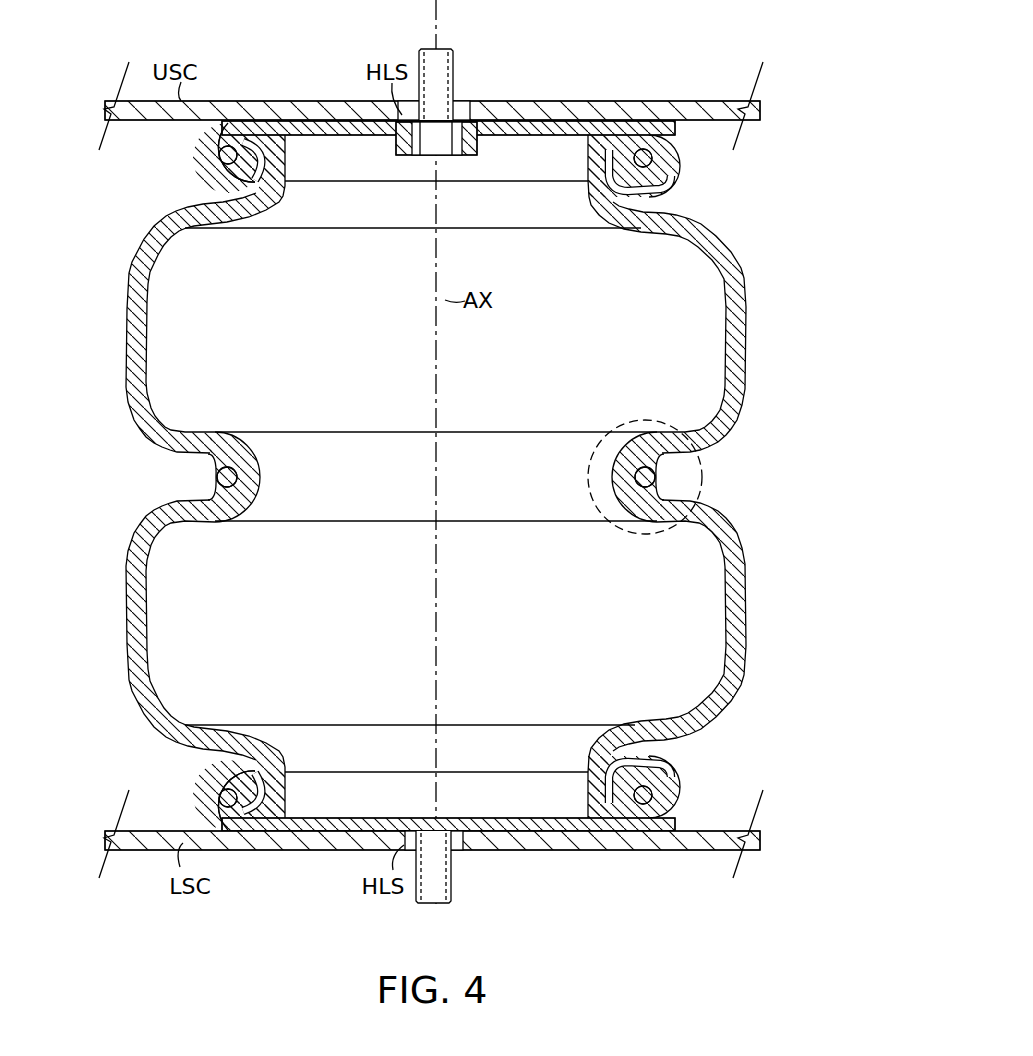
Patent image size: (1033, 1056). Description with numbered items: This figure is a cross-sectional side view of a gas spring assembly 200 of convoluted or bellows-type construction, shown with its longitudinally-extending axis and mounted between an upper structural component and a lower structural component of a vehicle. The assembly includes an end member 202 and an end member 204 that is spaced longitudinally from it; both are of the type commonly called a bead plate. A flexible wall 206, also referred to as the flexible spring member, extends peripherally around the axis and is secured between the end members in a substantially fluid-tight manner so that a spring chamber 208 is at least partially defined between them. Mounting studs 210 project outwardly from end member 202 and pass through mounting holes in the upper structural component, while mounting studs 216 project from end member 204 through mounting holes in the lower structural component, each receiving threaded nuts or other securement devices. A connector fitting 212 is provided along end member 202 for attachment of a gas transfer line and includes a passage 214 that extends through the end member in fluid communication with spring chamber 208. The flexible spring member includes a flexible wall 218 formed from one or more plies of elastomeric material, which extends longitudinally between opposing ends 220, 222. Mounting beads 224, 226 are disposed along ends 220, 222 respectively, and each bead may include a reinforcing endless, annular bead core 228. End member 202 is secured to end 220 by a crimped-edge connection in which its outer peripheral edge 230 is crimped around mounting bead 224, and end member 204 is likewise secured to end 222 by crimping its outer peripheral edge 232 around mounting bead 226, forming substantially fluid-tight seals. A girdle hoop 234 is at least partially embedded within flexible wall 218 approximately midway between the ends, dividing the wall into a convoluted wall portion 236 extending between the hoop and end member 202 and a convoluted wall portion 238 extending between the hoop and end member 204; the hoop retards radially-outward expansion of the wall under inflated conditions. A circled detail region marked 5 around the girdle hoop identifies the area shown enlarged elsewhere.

The detail view circle (FIG. 5) 5 is at (632, 420).
The gas spring assembly 200 is at (750, 200).
The end member 202 is at (607, 121).
The end member 204 is at (611, 829).
The flexible wall 206 is at (434, 476).
The spring chamber 208 is at (172, 379).
The mounting studs 210 is at (456, 62).
The connector fitting 212 is at (396, 151).
The passage 214 is at (454, 152).
The mounting studs 216 is at (453, 880).
The flexible wall 218 is at (126, 314).
The end 220 is at (271, 219).
The end 222 is at (292, 745).
The mounting bead 224 is at (244, 138).
The mounting bead 226 is at (240, 803).
The bead core 228 is at (662, 158).
The outer peripheral edge 230 is at (206, 168).
The outer peripheral edge 232 is at (201, 790).
The girdle hoop 234 is at (217, 479).
The convoluted wall portion 236 is at (752, 305).
The convoluted wall portion 238 is at (754, 575).